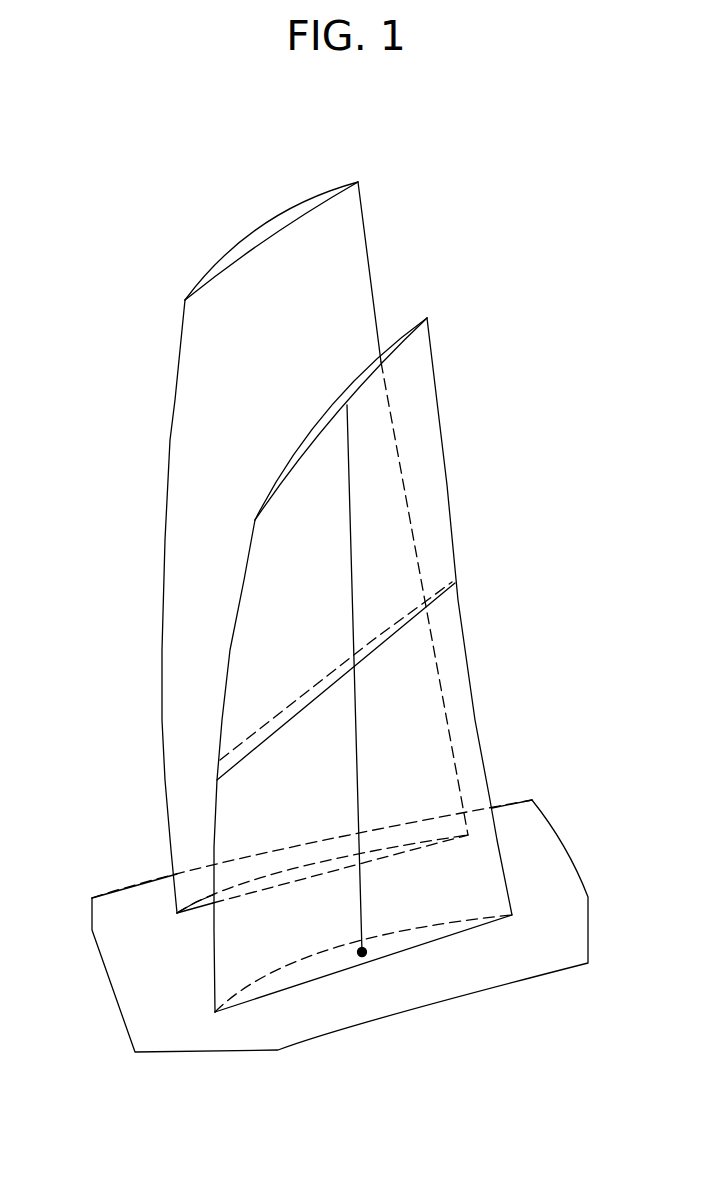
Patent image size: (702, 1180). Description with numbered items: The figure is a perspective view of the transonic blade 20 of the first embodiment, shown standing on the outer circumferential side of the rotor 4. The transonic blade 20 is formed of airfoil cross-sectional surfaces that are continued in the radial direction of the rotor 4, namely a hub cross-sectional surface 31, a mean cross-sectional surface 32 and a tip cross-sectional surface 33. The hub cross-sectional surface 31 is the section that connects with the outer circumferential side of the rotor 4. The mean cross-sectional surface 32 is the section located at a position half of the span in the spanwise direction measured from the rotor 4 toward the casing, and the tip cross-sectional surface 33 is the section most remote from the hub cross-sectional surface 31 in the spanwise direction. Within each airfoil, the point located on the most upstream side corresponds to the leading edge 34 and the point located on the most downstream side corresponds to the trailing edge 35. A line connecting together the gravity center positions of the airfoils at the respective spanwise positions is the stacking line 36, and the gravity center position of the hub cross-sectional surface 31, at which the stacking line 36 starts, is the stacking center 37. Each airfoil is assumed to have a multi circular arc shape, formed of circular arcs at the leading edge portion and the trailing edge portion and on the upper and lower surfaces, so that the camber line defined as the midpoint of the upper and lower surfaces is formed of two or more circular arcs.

The rotor 4 is at (158, 953).
The transonic blade 20 is at (316, 695).
The hub cross-sectional surface 31 is at (283, 972).
The mean cross-sectional surface 32 is at (455, 590).
The tip cross-sectional surface 33 is at (285, 470).
The leading edge 34 is at (212, 848).
The trailing edge 35 is at (447, 485).
The stacking line 36 is at (357, 762).
The stacking center 37 is at (368, 952).